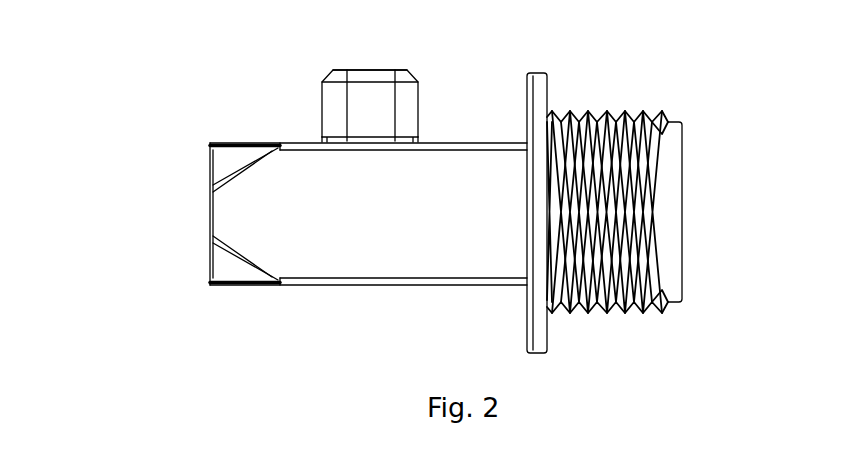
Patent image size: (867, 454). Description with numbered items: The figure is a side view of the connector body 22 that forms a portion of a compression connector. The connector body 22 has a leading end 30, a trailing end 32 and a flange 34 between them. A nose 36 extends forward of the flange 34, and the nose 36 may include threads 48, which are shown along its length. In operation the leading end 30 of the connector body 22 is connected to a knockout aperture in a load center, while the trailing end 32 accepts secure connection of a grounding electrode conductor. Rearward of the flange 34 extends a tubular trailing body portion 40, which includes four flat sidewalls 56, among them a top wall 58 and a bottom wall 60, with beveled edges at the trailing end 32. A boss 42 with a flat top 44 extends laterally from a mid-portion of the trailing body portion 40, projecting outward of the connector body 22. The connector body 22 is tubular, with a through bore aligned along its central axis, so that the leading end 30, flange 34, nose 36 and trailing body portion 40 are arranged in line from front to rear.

The connector body 22 is at (104, 160).
The leading end 30 is at (682, 212).
The trailing end 32 is at (210, 215).
The flange 34 is at (538, 73).
The nose 36 is at (668, 302).
The tubular trailing body portion 40 is at (525, 340).
The boss 42 is at (420, 103).
The flat top 44 is at (372, 70).
The threads 48 is at (633, 111).
The flat sidewalls 56 is at (366, 222).
The top wall 58 is at (243, 143).
The bottom wall 60 is at (243, 286).